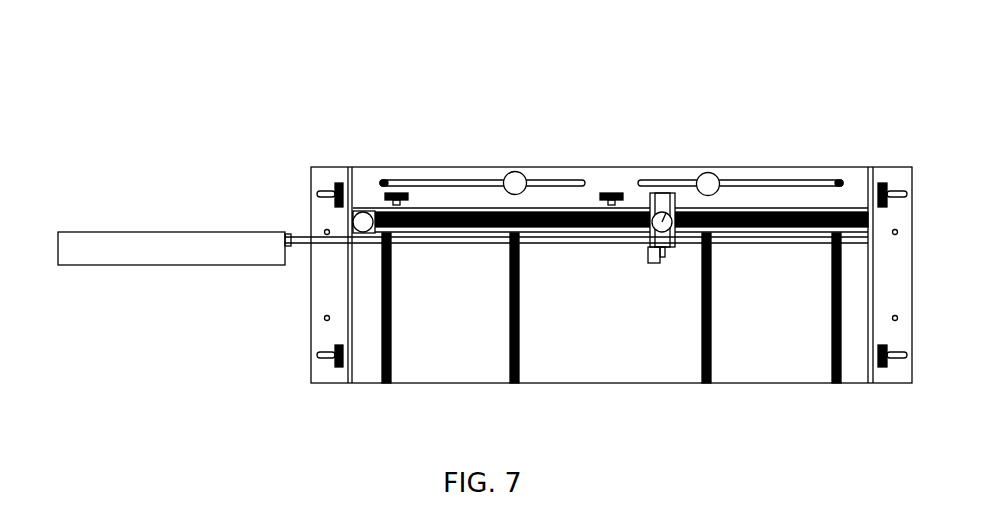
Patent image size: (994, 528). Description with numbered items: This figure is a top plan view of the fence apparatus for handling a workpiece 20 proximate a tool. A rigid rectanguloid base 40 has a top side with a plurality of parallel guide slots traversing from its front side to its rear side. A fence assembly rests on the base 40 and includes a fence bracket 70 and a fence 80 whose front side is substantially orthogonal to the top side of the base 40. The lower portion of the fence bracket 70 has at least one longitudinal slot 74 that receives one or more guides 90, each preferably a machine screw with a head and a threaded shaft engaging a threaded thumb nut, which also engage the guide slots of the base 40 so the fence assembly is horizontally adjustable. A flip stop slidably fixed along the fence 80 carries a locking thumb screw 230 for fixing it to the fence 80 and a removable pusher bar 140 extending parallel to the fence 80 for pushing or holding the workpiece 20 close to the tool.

The workpiece 20 is at (112, 258).
The base 40 is at (630, 327).
The fence bracket 70 is at (608, 192).
The longitudinal slot 74 is at (458, 180).
The fence 80 is at (740, 212).
The guide 90 is at (383, 180).
The pusher bar 140 is at (445, 243).
The locking thumb screw 230 is at (658, 193).